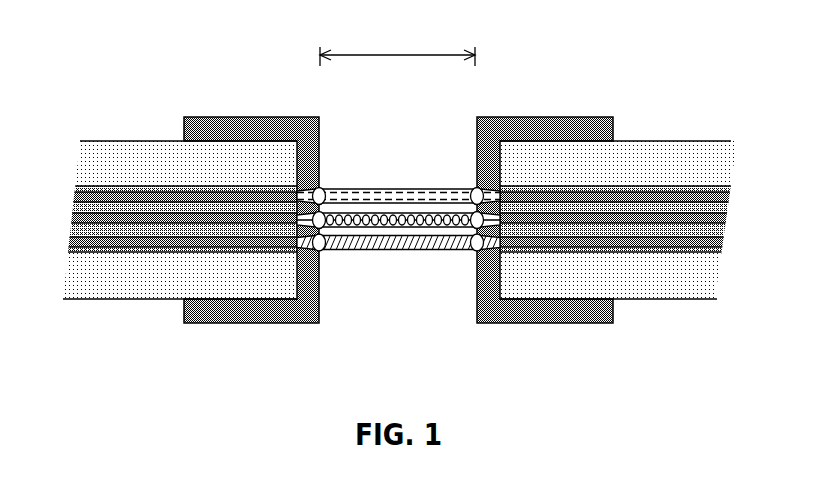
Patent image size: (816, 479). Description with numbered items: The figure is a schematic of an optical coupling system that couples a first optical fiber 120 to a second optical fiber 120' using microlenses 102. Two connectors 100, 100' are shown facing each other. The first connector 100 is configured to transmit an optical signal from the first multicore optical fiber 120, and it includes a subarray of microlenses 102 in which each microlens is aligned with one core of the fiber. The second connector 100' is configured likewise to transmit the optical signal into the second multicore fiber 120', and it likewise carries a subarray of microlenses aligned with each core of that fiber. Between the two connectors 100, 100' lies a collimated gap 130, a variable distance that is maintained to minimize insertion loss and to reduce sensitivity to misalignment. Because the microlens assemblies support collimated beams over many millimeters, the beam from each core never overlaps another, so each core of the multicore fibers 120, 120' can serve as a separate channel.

The first connector 100 is at (235, 264).
The second connector 100' is at (524, 264).
The microlens 102 is at (322, 188).
The first optical fiber 120 is at (170, 266).
The second optical fiber 120' is at (625, 266).
The collimated gap 130 is at (397, 38).